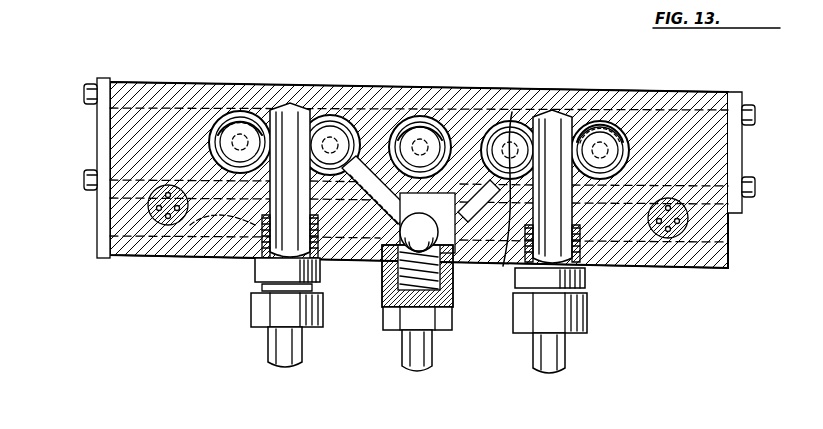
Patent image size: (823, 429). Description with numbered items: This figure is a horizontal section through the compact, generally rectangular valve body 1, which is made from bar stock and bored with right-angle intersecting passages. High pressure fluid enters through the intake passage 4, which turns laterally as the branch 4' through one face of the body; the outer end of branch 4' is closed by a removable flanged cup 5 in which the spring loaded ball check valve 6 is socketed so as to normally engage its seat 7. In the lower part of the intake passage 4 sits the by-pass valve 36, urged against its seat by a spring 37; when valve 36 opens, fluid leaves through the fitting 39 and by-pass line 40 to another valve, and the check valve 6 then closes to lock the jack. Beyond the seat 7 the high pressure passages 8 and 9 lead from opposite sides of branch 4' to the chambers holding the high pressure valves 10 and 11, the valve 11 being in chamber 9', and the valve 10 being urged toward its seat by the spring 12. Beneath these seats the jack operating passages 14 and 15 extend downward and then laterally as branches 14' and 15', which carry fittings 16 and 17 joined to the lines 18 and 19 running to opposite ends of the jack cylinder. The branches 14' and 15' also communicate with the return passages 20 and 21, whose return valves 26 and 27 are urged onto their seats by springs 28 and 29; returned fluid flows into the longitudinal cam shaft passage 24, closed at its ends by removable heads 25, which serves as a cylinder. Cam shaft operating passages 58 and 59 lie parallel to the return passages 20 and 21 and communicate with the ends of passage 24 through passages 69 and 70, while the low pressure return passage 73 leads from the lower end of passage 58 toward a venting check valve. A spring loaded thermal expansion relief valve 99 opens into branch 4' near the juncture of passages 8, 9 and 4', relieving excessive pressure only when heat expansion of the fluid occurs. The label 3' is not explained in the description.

The body 1 is at (148, 82).
The cam shaft passage 24 is at (198, 110).
The return passage 20 is at (237, 112).
The return valve 26 is at (243, 124).
The spring 28 is at (252, 122).
The jack operating passage 14 is at (290, 160).
The lateral branch of jack operating passage 14' is at (293, 77).
The passage 3' is at (335, 85).
The spring 12 is at (340, 120).
The high pressure valve 10 is at (352, 138).
The high pressure passage 8 is at (362, 122).
The spring 37 is at (406, 124).
The high pressure by-pass valve 36 is at (422, 128).
The high pressure intake passage 4 is at (446, 87).
The valve chamber 9' is at (504, 84).
The high pressure passage 9 is at (509, 121).
The jack operating passage 15 is at (546, 163).
The high pressure valve 11 is at (540, 105).
The lateral branch of jack operating passage 15' is at (581, 100).
The spring 29 is at (604, 124).
The return passage 21 is at (598, 140).
The return valve 27 is at (606, 132).
The removable heads 25 is at (105, 141).
The passage 69 is at (108, 205).
The cam shaft operating passage 58 is at (158, 218).
The low pressure return passage 73 is at (166, 256).
The thermal expansion relief valve 99 is at (240, 236).
The fitting 17 is at (252, 302).
The line 19 is at (268, 348).
The seat 7 is at (388, 250).
The check valve 6 is at (395, 276).
The flanged cup 5 is at (390, 300).
The fitting 39 is at (400, 320).
The by-pass line 40 is at (410, 358).
The fitting 16 is at (585, 308).
The line 18 is at (566, 352).
The passage 70 is at (700, 212).
The cam shaft operating passage 59 is at (688, 226).
The lateral branch of intake passage 4' is at (470, 199).